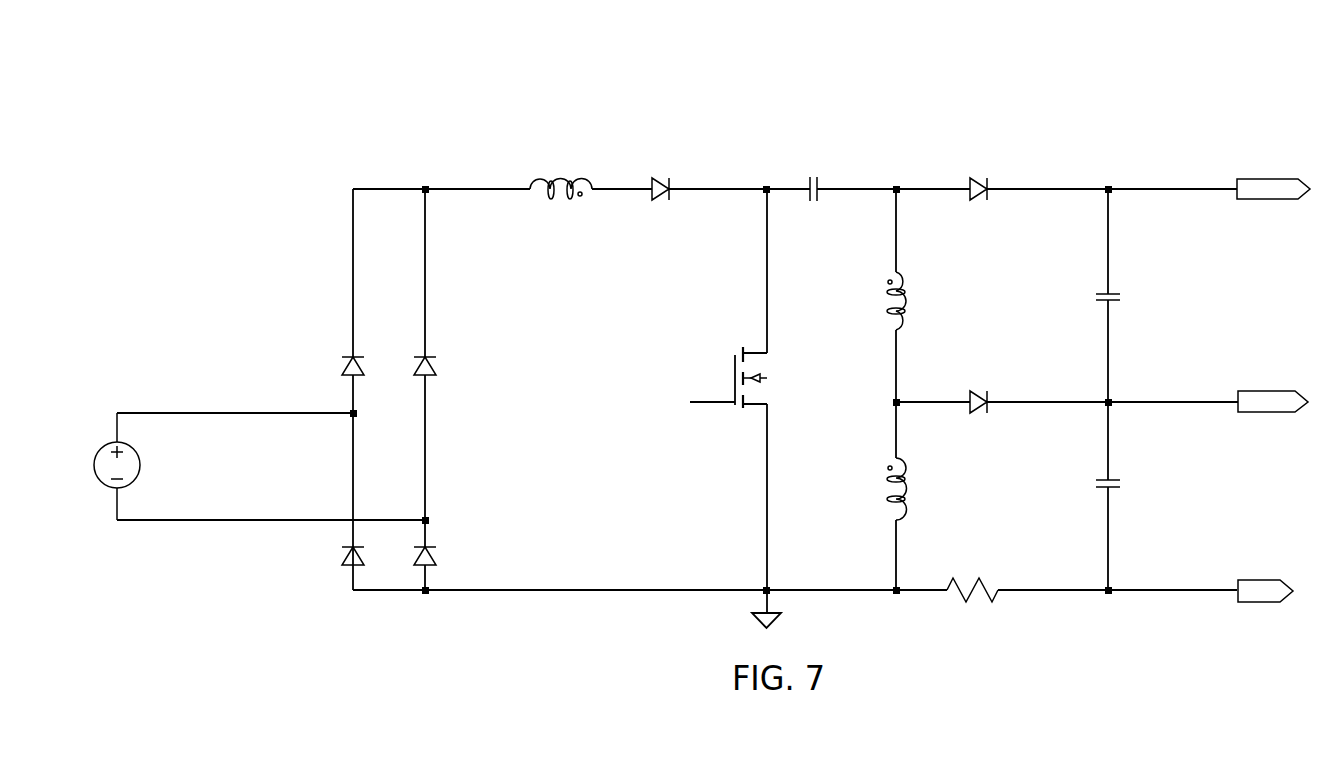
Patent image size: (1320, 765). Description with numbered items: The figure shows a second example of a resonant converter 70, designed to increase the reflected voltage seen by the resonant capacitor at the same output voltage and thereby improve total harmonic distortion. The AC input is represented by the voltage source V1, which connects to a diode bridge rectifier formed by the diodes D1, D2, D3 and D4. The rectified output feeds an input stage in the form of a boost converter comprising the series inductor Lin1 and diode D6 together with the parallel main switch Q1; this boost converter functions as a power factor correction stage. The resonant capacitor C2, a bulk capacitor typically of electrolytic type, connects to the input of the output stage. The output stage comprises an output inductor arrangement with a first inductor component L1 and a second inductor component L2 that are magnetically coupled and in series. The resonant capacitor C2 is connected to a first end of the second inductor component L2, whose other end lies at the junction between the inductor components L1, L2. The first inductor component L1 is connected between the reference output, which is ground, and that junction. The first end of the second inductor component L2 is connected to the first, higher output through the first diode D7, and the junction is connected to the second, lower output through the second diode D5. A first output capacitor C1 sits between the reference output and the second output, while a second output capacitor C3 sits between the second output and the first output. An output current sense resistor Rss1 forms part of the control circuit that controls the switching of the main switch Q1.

The LED driver circuit 70 is at (424, 80).
The voltage source V1 is at (124, 466).
The diode D1 is at (343, 356).
The diode D2 is at (416, 356).
The diode D3 is at (343, 546).
The diode D4 is at (416, 546).
The series inductor Lin1 is at (561, 181).
The diode D6 is at (659, 181).
The resonant capacitor C2 is at (813, 189).
The main switch Q1 is at (763, 377).
The second inductor component L2 is at (907, 301).
The first inductor component L1 is at (907, 489).
The first diode D7 is at (976, 181).
The second diode D5 is at (976, 394).
The second output capacitor C3 is at (1115, 287).
The first output capacitor C1 is at (1115, 473).
The output current sense resistor Rss1 is at (972, 584).